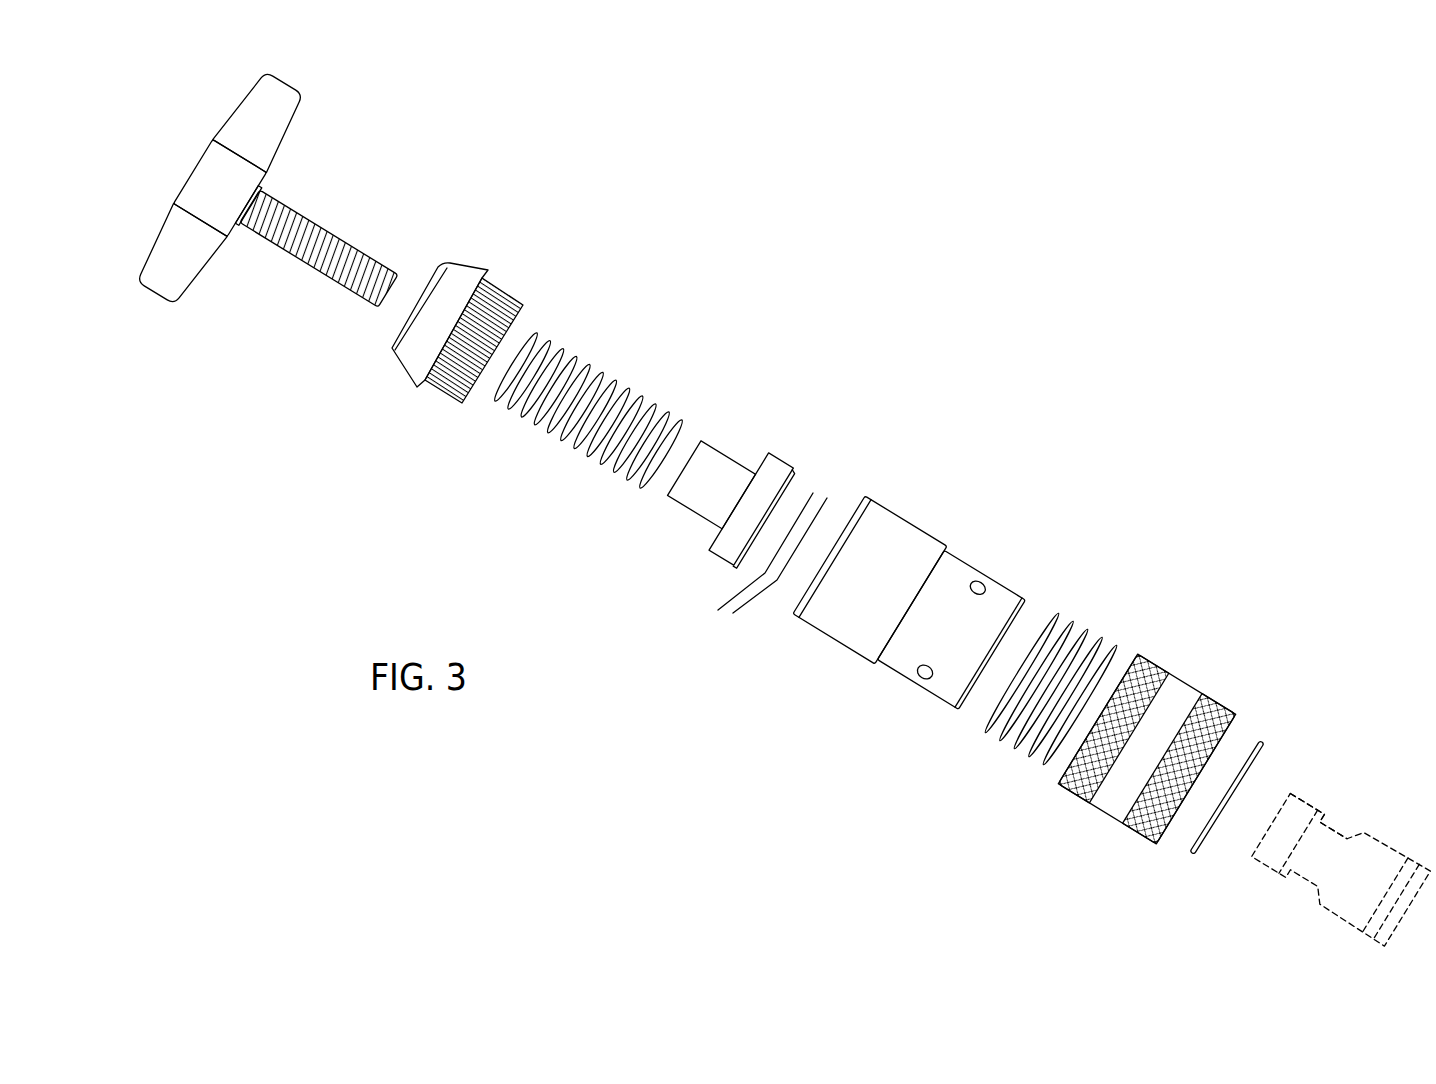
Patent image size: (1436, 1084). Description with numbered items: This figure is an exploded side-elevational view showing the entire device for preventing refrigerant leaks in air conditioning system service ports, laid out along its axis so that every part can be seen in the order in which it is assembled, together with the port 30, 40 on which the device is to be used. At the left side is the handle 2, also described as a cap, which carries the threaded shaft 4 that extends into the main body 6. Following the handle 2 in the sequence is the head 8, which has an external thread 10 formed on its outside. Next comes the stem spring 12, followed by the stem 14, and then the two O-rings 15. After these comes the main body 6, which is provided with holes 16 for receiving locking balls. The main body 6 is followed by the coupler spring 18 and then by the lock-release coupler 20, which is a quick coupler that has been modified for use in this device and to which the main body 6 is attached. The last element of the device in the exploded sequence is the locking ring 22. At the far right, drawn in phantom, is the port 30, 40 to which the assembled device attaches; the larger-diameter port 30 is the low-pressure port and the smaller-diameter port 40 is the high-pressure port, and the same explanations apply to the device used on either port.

The handle 2 is at (252, 90).
The threaded shaft 4 is at (313, 227).
The main body 6 is at (900, 518).
The head 8 is at (465, 262).
The external thread 10 is at (505, 290).
The stem spring 12 is at (593, 375).
The stem 14 is at (723, 452).
The O-rings 15 is at (764, 566).
The holes 16 is at (977, 588).
The coupler spring 18 is at (1073, 625).
The lock-release coupler 20 is at (1177, 677).
The locking ring 22 is at (1264, 741).
The low-pressure port 30 is at (1387, 848).
The high-pressure port 40 is at (1319, 815).